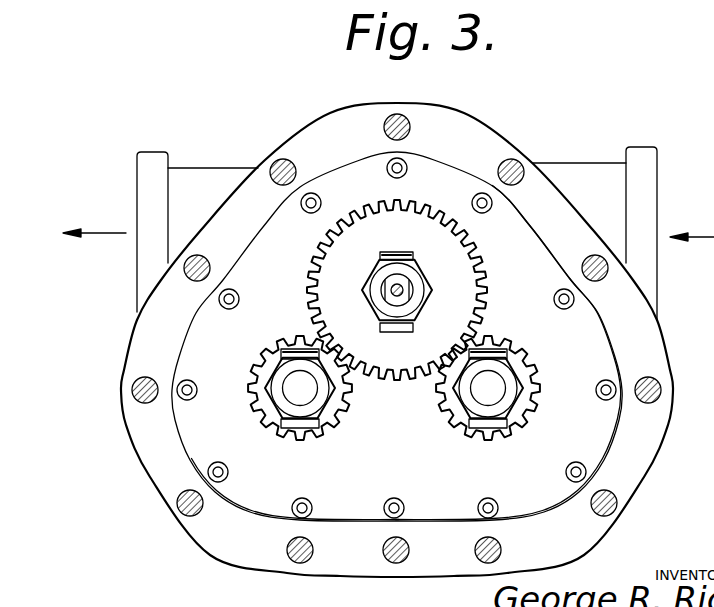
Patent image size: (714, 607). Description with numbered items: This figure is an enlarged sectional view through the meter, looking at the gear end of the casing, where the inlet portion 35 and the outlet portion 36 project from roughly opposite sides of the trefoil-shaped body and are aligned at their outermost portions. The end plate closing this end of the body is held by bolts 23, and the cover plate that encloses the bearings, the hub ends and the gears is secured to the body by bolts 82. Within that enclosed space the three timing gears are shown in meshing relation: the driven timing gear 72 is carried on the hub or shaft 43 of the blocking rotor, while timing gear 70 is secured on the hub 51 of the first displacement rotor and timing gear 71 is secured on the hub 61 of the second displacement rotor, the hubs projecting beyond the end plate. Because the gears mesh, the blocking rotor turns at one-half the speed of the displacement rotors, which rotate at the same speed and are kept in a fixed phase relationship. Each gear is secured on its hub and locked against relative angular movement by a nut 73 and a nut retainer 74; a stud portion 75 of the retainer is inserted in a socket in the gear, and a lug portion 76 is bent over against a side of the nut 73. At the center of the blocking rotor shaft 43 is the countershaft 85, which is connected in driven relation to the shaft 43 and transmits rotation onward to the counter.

The inlet portion 35 is at (642, 157).
The outlet portion 36 is at (155, 160).
The bolts 82 is at (410, 117).
The bolts 23 is at (311, 213).
The driven timing gear 72 is at (462, 299).
The nut 73 is at (374, 301).
The nut retainer 74 is at (412, 270).
The stud portion 75 is at (393, 253).
The lug portion 76 is at (393, 334).
The hub or shaft 43 is at (401, 303).
The countershaft 85 is at (392, 289).
The timing gear 71 is at (332, 423).
The hub 61 is at (291, 393).
The timing gear 70 is at (521, 425).
The hub or shaft 51 is at (488, 390).